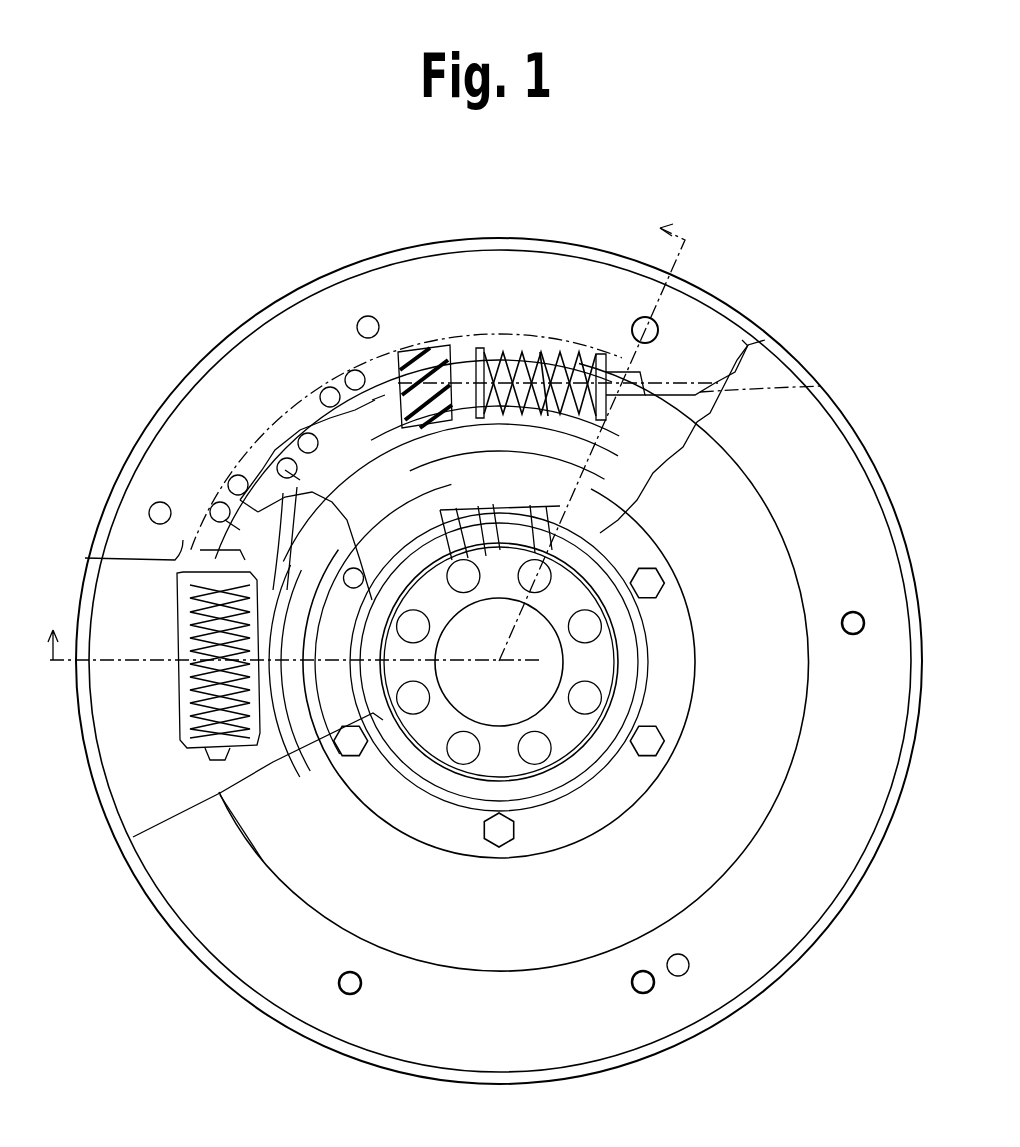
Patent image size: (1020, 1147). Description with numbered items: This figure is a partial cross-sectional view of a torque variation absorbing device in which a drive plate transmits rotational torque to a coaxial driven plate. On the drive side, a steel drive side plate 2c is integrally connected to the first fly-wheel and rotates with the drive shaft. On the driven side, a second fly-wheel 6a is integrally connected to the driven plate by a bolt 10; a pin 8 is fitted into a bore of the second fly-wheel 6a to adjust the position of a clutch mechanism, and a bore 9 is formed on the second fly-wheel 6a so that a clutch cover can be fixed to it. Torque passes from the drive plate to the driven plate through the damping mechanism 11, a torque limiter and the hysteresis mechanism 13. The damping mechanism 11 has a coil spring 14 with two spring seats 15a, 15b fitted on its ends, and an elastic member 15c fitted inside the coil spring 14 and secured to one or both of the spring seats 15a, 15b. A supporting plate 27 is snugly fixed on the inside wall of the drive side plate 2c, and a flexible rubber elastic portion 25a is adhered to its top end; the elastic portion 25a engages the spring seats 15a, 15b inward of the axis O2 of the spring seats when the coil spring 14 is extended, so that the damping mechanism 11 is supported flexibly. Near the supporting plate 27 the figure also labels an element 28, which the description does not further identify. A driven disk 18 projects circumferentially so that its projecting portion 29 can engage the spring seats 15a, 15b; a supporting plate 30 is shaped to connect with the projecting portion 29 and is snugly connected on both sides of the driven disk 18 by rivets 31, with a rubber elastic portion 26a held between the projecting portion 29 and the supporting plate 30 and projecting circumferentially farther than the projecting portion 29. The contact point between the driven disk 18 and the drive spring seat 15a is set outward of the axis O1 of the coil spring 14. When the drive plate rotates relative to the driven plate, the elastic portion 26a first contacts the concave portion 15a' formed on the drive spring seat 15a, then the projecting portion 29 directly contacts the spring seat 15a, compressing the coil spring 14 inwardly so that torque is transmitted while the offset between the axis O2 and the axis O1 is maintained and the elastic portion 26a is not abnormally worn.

The second fly-wheel 6a is at (835, 452).
The hysteresis mechanism 13 is at (518, 468).
The drive side plate 2c is at (382, 432).
The bolt 10 is at (497, 855).
The bore 9 is at (345, 990).
The pin 8 is at (688, 968).
The damping mechanism 11 is at (463, 412).
The coil spring 14 is at (453, 358).
The spring seat 15a is at (396, 306).
The concave portion 15a' is at (488, 496).
The spring seat 15b is at (663, 345).
The elastic member 15c is at (553, 358).
The axis of the coil spring O1 is at (822, 386).
The axis of the spring seats O2 is at (748, 342).
The driven disk 18 is at (270, 498).
The elastic portion 25a is at (213, 548).
The elastic portion 26a is at (245, 585).
The supporting plate 27 is at (350, 372).
The roller 28 is at (325, 392).
The projecting portion 29 is at (322, 441).
The supporting plate 30 is at (292, 472).
The rivets 31 is at (287, 478).